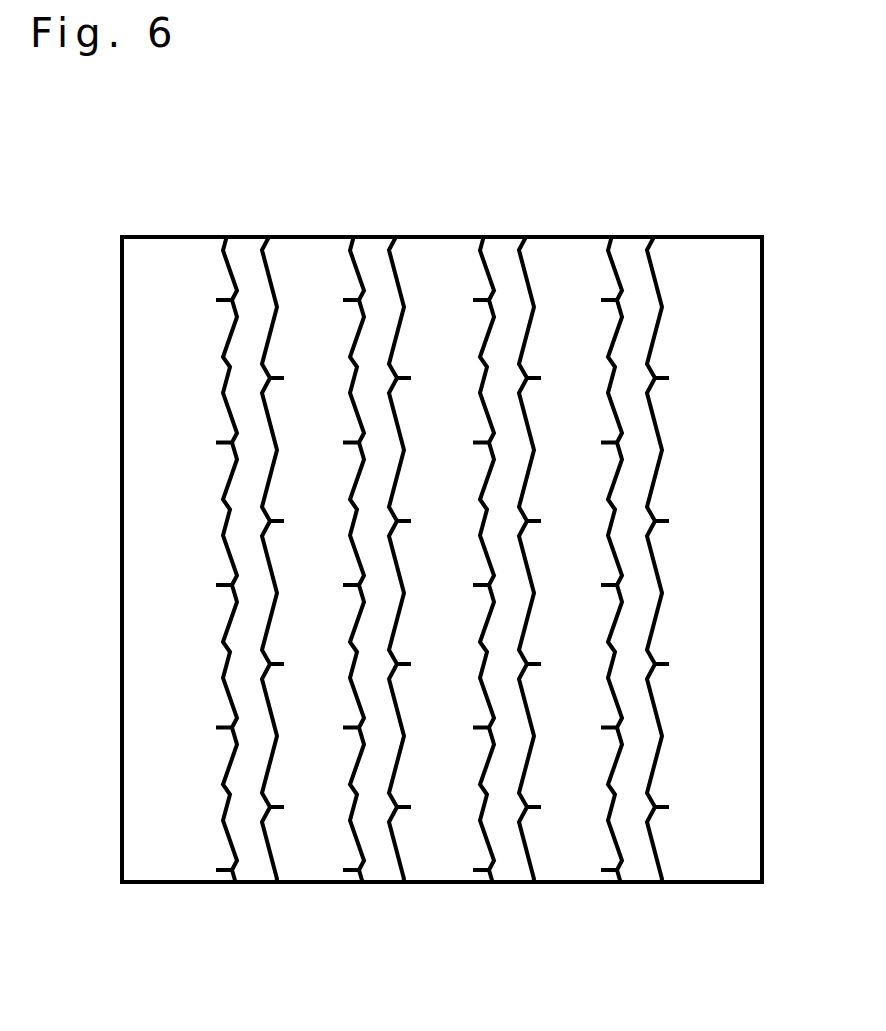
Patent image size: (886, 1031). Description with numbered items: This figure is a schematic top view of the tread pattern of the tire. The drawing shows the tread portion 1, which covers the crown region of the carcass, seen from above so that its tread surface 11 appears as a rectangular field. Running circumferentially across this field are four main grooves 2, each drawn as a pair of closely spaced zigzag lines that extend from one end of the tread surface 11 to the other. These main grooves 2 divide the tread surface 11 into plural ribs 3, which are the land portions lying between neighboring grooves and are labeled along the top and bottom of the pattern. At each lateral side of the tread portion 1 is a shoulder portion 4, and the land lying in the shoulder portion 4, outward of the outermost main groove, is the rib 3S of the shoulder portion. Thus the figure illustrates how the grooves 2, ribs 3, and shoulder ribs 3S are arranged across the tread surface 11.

The tread portion 1 is at (567, 273).
The main grooves 2 is at (248, 823).
The ribs 3 is at (173, 262).
The rib of the shoulder portion 3S is at (202, 812).
The shoulder portion 4 is at (160, 800).
The tread surface 11 is at (703, 332).